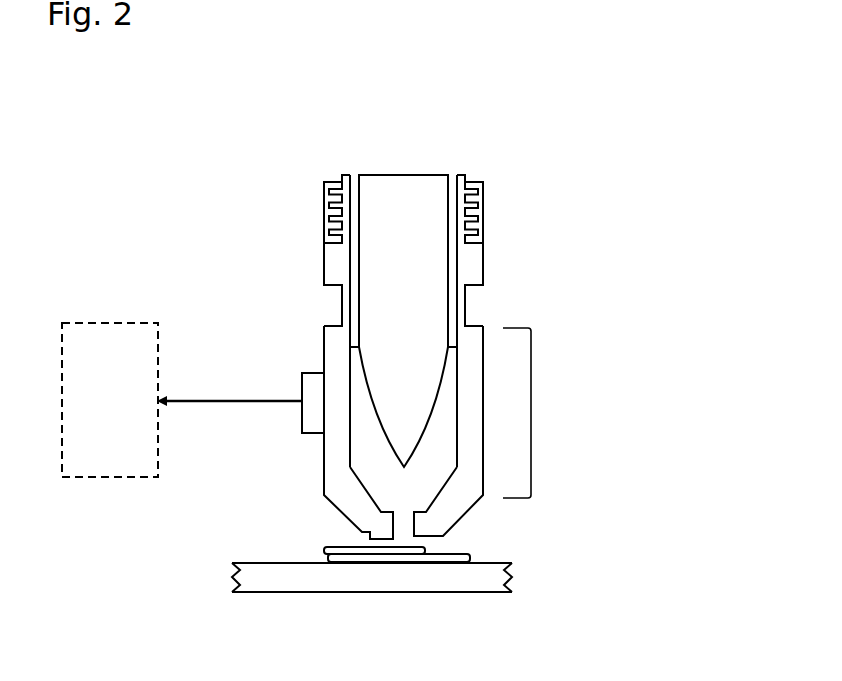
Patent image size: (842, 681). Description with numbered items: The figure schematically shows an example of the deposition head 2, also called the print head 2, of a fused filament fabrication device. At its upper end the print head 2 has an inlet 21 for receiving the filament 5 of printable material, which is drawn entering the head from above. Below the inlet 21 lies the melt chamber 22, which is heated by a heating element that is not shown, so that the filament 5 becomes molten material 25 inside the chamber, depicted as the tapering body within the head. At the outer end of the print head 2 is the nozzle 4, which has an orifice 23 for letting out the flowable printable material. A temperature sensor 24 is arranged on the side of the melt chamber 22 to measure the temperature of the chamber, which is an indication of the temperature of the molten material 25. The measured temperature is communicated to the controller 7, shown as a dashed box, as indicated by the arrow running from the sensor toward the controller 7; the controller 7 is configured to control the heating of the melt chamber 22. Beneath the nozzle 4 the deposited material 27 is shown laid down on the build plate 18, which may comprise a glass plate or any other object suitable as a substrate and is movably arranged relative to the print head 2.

The print head 2 is at (226, 218).
The filament 5 is at (385, 185).
The inlet 21 is at (453, 180).
The melt chamber 22 is at (531, 407).
The molten material 25 is at (370, 483).
The nozzle 4 is at (362, 531).
The temperature sensor 24 is at (303, 383).
The controller 7 is at (115, 465).
The deposited material 27 is at (470, 560).
The orifice 23 is at (403, 535).
The build plate 18 is at (267, 585).